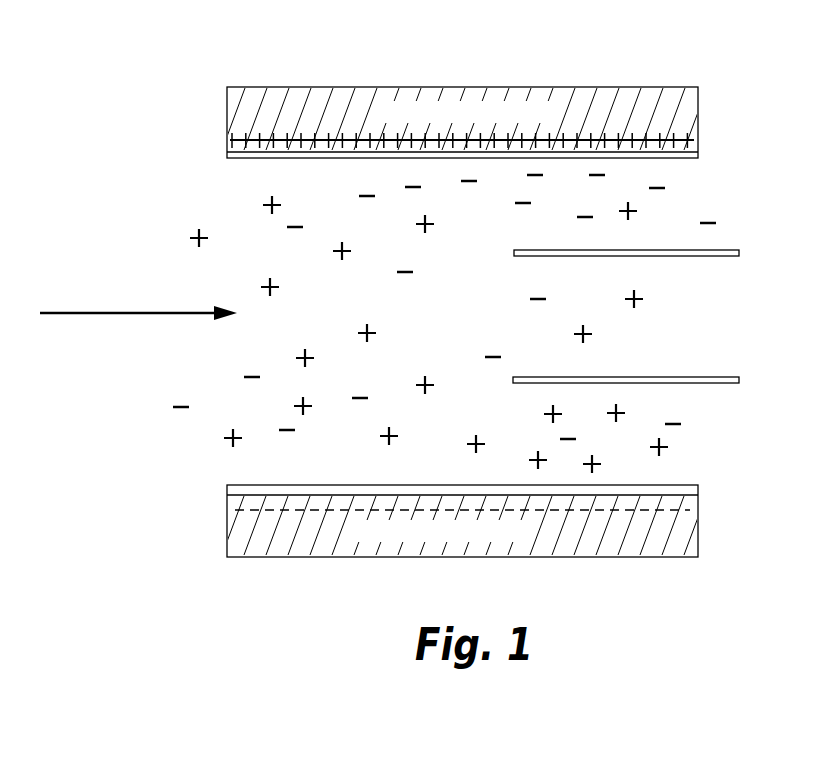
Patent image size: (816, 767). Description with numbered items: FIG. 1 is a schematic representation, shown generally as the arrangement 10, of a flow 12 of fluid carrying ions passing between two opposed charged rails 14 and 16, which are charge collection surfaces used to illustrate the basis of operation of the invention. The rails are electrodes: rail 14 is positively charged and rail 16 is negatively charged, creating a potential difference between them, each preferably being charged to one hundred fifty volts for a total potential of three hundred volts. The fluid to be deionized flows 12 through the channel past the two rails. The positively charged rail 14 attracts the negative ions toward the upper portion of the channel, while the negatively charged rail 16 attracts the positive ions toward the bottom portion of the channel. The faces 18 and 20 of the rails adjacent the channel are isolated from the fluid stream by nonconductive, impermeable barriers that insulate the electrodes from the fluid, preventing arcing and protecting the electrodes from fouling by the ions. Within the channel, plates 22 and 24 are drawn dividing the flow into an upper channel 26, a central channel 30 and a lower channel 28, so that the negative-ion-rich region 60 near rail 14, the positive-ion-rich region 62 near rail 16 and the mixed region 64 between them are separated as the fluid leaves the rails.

The ion separation system 10 is at (652, 37).
The incoming ionized fluid flow 12 is at (150, 367).
The rail 14 is at (481, 106).
The rail 16 is at (492, 542).
The charged surface of upper rail 18 is at (698, 151).
The charged surface of lower rail 20 is at (698, 490).
The upper separator plate 22 is at (739, 250).
The lower separator plate 24 is at (739, 377).
The upper channel 26 is at (650, 213).
The lower channel 28 is at (682, 443).
The central channel 30 is at (667, 338).
The negative ion rich region 60 is at (672, 173).
The positive ion rich region 62 is at (717, 401).
The mixed ion region 64 is at (708, 285).